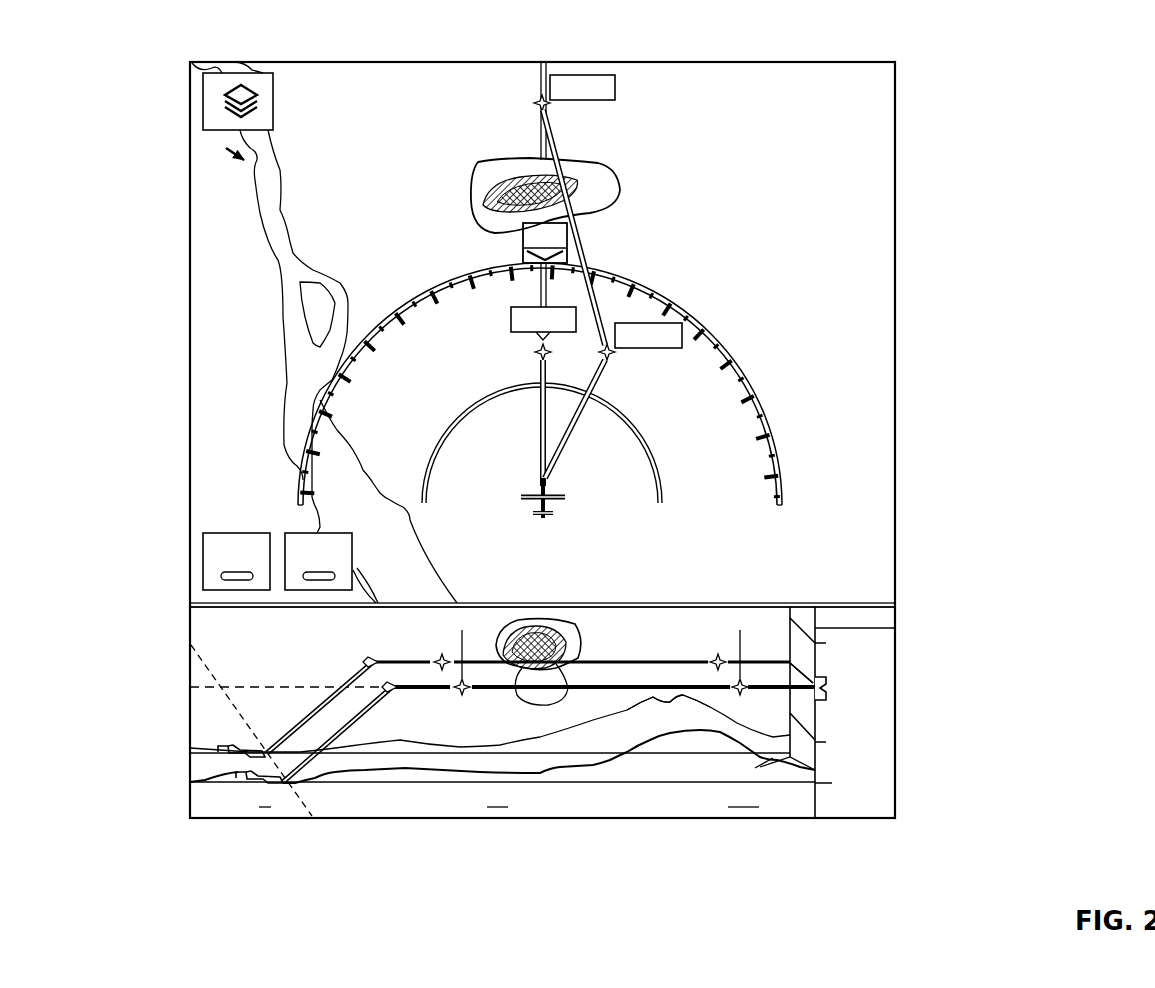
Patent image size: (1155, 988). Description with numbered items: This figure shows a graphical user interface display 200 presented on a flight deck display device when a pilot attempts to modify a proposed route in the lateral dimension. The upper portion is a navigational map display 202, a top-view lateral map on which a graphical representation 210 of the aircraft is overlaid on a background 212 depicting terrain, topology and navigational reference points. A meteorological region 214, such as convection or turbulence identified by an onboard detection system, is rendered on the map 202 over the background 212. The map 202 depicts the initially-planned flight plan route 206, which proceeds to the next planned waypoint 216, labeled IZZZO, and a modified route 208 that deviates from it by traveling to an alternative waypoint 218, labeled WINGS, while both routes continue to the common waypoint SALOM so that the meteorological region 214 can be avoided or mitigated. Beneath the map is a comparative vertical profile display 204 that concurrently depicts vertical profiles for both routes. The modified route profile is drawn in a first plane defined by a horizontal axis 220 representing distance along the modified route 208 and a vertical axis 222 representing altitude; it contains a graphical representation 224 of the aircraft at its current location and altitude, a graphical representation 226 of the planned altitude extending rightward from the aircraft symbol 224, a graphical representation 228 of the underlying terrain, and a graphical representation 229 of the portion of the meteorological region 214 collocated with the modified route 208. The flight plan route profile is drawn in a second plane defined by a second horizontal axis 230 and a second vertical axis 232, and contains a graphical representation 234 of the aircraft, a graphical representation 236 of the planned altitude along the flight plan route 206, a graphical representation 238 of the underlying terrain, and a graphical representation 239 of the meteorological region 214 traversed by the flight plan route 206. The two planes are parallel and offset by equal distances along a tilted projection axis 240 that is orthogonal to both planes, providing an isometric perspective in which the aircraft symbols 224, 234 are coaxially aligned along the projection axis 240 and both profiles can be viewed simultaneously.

The graphical user interface display 200 is at (212, 46).
The navigational map display 202 is at (185, 442).
The comparative vertical profile display 204 is at (185, 762).
The flight plan route 206 is at (530, 452).
The modified route 208 is at (607, 307).
The graphical representation of the aircraft 210 is at (532, 507).
The background 212 is at (408, 193).
The meteorological region 214 is at (495, 170).
The next planned waypoint 216 is at (530, 352).
The alternative waypoint 218 is at (620, 353).
The horizontal axis 220 is at (541, 783).
The vertical axis 222 is at (818, 712).
The graphical representation of the aircraft 224 is at (240, 772).
The graphical representation of planned altitude 226 is at (672, 690).
The graphical representation of terrain 228 is at (818, 758).
The graphical representation of meteorological region 229 is at (555, 677).
The second horizontal axis 230 is at (427, 755).
The second vertical axis 232 is at (820, 647).
The graphical representation of the aircraft 234 is at (248, 750).
The graphical representation of planned altitude 236 is at (357, 672).
The graphical representation of terrain 238 is at (623, 724).
The graphical representation of meteorological region 239 is at (560, 625).
The projection axis 240 is at (295, 790).